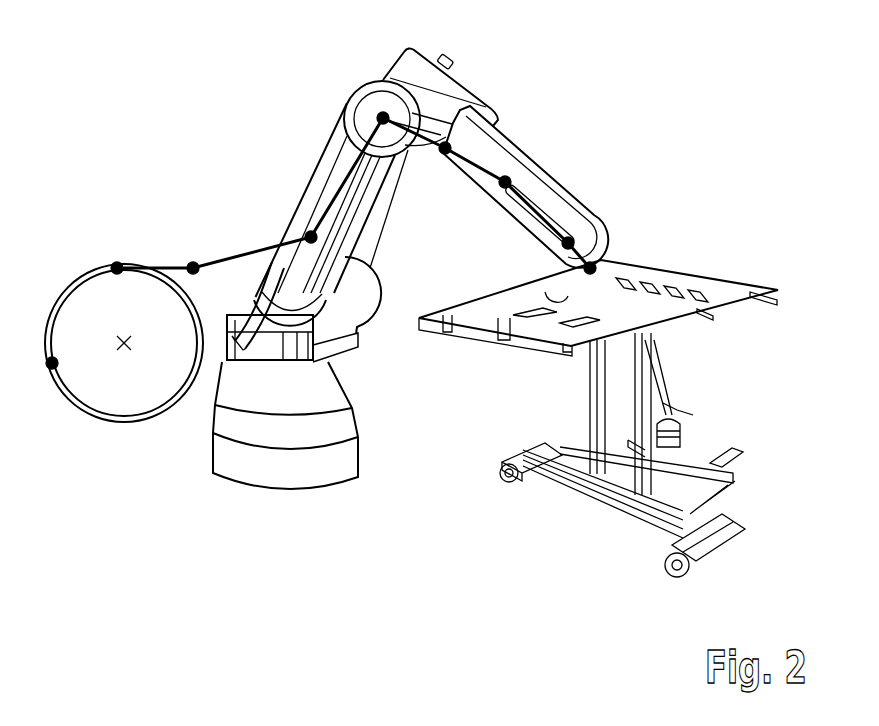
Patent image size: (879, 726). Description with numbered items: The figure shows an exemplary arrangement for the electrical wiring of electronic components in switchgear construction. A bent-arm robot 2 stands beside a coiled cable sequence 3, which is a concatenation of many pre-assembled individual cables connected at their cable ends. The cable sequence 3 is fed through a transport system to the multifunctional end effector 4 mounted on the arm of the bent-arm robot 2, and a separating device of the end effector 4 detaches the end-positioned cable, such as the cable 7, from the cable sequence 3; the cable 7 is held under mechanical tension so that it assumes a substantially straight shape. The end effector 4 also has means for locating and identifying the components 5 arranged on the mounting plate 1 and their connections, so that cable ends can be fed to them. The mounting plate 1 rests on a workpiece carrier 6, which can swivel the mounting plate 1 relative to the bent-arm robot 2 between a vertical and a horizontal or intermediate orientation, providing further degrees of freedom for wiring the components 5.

The mounting plate 1 is at (713, 300).
The bent-arm robot 2 is at (265, 116).
The cable sequence 3 is at (68, 270).
The multifunctional end effector 4 is at (600, 223).
The components 5 is at (667, 277).
The workpiece carrier 6 is at (755, 414).
The cable 7 is at (548, 288).